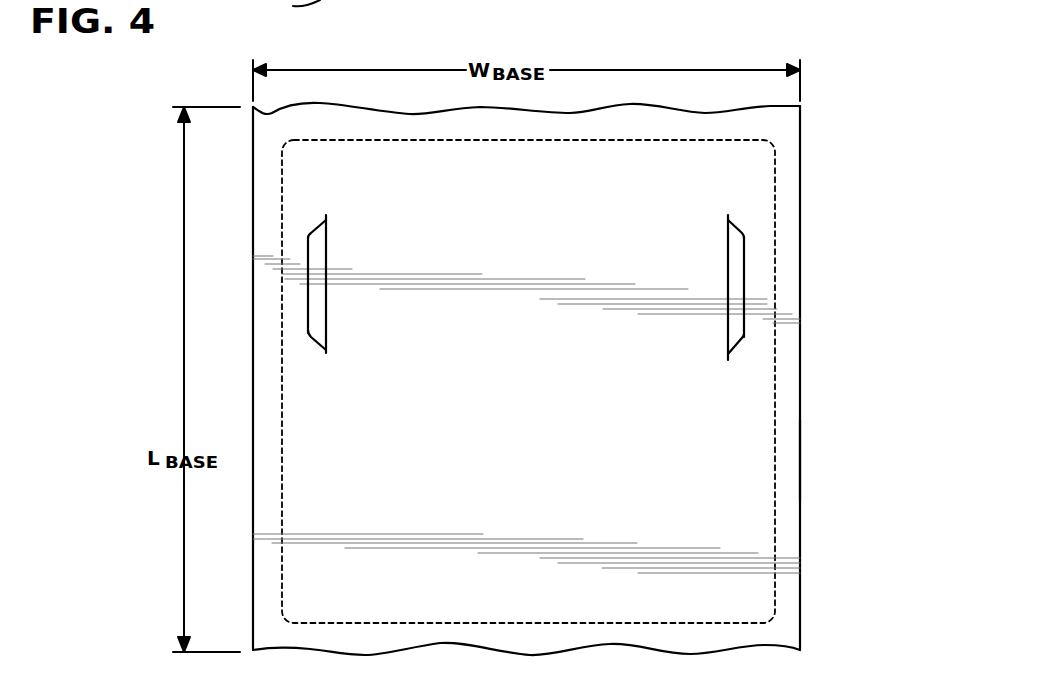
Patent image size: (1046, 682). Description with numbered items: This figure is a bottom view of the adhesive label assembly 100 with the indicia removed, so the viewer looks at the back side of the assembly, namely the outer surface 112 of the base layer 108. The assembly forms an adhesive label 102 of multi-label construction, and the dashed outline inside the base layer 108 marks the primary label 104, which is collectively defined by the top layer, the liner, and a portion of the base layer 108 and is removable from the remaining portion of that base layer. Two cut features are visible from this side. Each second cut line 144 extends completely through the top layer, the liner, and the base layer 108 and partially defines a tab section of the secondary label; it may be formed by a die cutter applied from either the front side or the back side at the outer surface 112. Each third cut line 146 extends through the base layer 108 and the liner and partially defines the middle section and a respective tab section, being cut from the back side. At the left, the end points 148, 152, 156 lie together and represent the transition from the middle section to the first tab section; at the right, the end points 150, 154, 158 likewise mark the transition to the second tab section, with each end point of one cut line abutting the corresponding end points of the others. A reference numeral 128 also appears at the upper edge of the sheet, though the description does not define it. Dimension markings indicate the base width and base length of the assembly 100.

The adhesive label assembly 100 is at (810, 107).
The adhesive label 102 is at (778, 338).
The primary label 104 is at (776, 197).
The base layer 108 is at (840, 474).
The outer surface 112 is at (790, 460).
The cover 128 is at (292, 5).
The second cut line 144 is at (308, 255).
The third cut line 146 is at (326, 305).
The end point 148 is at (370, 285).
The end point 152 is at (370, 285).
The end point 156 is at (326, 217).
The end point 150 is at (666, 286).
The end point 154 is at (666, 286).
The end point 158 is at (728, 215).